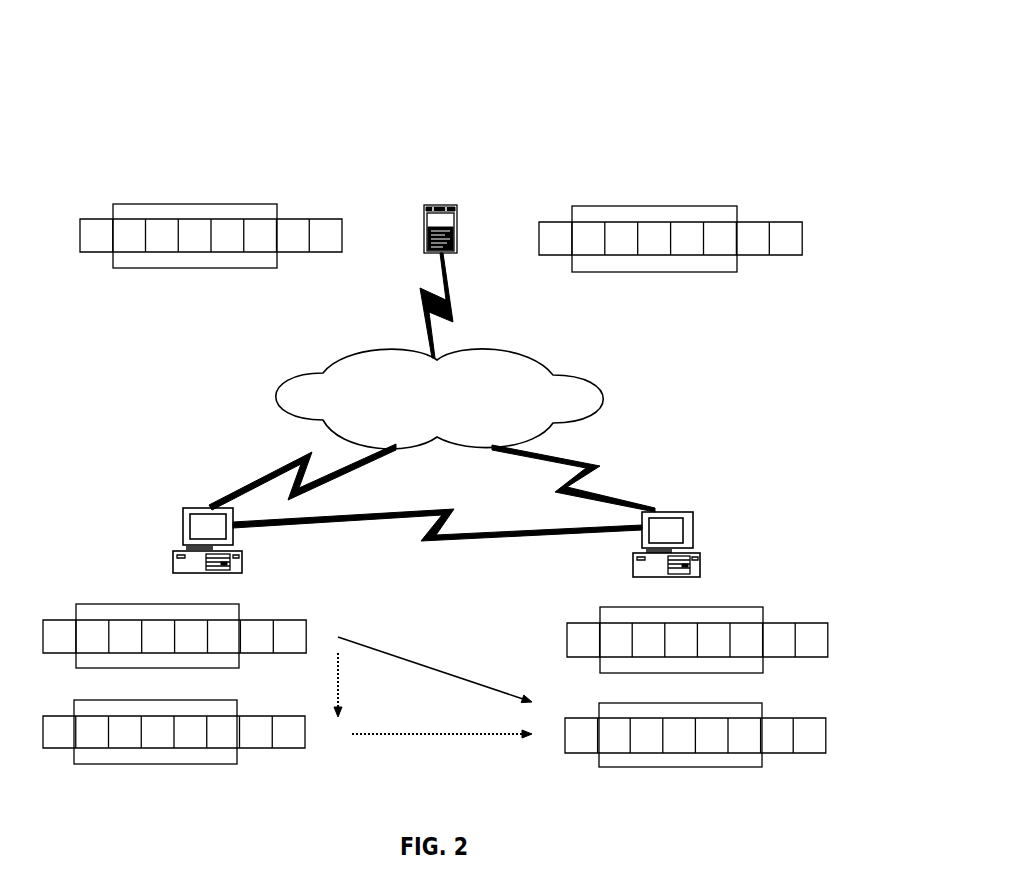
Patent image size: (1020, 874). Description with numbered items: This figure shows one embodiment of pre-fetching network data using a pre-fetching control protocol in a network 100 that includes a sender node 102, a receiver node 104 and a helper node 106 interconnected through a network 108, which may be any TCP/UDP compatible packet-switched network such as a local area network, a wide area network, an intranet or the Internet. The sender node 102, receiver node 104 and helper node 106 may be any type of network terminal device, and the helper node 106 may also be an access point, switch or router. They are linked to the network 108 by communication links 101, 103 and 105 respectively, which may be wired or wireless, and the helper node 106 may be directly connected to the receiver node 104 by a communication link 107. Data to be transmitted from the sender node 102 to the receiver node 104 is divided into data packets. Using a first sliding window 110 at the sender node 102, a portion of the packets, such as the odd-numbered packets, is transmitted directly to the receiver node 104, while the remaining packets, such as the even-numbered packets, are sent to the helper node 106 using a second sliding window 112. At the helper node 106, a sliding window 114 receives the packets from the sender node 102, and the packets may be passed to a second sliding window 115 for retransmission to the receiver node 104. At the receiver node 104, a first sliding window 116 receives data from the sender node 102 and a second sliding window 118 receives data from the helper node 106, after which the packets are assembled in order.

The network 100 is at (644, 38).
The communication link 101 is at (467, 305).
The sender node 102 is at (470, 198).
The communication link 103 is at (573, 473).
The receiver node 104 is at (695, 521).
The communication link 105 is at (302, 471).
The helper node 106 is at (181, 518).
The communication link 107 is at (437, 546).
The network 108 is at (440, 399).
The first sliding window 110 is at (670, 218).
The second sliding window 112 is at (200, 213).
The sliding window 114 is at (157, 613).
The second sliding window 115 is at (155, 754).
The first sliding window 116 is at (697, 619).
The second sliding window 118 is at (695, 758).